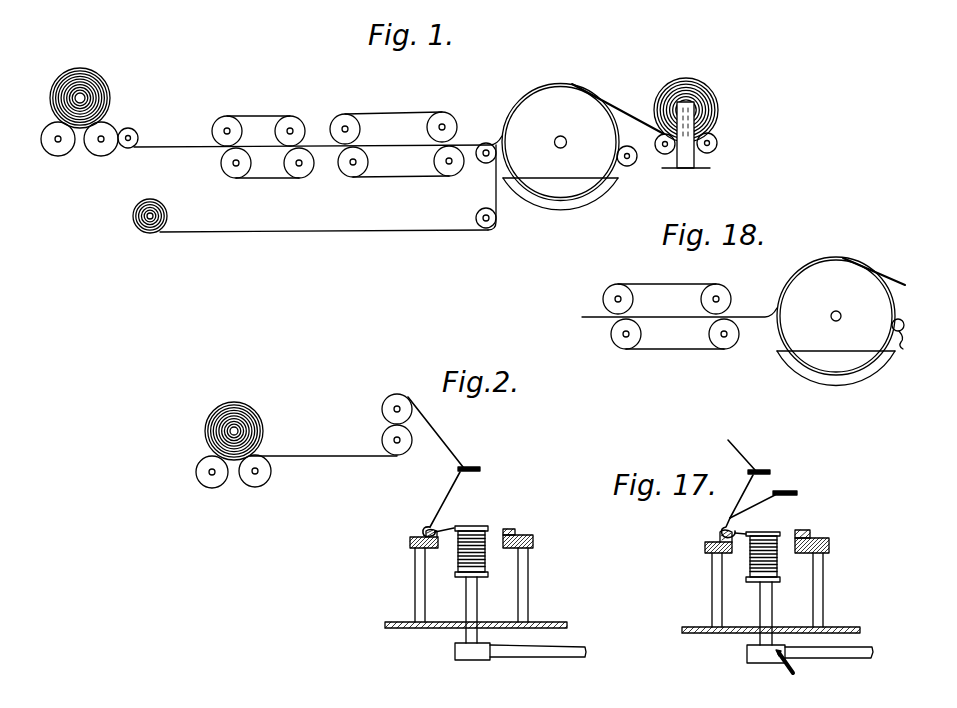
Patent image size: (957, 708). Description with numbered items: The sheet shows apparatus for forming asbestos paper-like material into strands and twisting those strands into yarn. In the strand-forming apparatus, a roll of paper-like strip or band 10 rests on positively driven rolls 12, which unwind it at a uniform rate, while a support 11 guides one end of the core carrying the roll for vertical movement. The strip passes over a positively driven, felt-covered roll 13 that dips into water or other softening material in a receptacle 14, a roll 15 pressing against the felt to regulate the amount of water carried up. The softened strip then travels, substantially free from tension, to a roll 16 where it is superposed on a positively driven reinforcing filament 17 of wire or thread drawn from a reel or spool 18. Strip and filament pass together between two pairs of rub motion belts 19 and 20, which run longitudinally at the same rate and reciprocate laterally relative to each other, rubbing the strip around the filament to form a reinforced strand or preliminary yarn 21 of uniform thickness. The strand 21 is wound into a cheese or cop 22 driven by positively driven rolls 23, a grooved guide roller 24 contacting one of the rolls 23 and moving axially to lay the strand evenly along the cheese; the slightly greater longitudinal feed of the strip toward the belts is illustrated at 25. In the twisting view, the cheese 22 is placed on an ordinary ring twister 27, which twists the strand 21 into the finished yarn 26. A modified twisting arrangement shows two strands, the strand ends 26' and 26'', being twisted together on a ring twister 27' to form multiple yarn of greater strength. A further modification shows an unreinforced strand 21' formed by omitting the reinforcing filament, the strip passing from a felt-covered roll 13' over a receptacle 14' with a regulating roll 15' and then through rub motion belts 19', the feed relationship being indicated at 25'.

In FIG. 1, the roll of paper-like strip or band 10 is at (700, 83).
In FIG. 1, the support 11 is at (685, 162).
In FIG. 1, the positively driven rolls 12 is at (672, 149).
In FIG. 1, the positively driven roll 13 is at (583, 128).
In FIG. 1, the receptacle 14 is at (560, 211).
In FIG. 1, the roll 15 is at (632, 172).
In FIG. 1, the roll 16 is at (483, 163).
In FIG. 1, the reinforcing filament 17 is at (338, 232).
In FIG. 1, the reel or spool 18 is at (146, 234).
In FIG. 1, the rub motion belts 19 is at (397, 160).
In FIG. 1, the rub motion belts 20 is at (264, 180).
In FIG. 1, the reinforced strand or preliminary yarn 21 is at (318, 134).
In FIG. 1, the cheese or cop 22 is at (104, 82).
In FIG. 2, the cheese or cop 22 is at (213, 422).
In FIG. 1, the positively driven rolls 23 is at (94, 154).
In FIG. 2, the positively driven rolls 23 is at (257, 483).
In FIG. 1, the guide roller 24 is at (132, 128).
In FIG. 1, the provision for greater longitudinal movement 25 is at (488, 112).
In FIG. 2, the finished yarn 26 is at (482, 535).
In FIG. 2, the ring twister 27 is at (468, 594).
In FIG. 18, the drum (modification) 13' is at (841, 300).
In FIG. 18, the tray (modification) 14' is at (836, 383).
In FIG. 18, the stripping device (modification) 15' is at (912, 346).
In FIG. 18, the feed rollers (modification) 19' is at (671, 335).
In FIG. 18, the strip (modification) 21' is at (664, 297).
In FIG. 18, the point of contact (modification) 25' is at (760, 294).
In FIG. 17, the first strip end 26' is at (727, 474).
In FIG. 17, the second strip end 26'' is at (784, 486).
In FIG. 17, the spool stand (modification) 27' is at (765, 601).